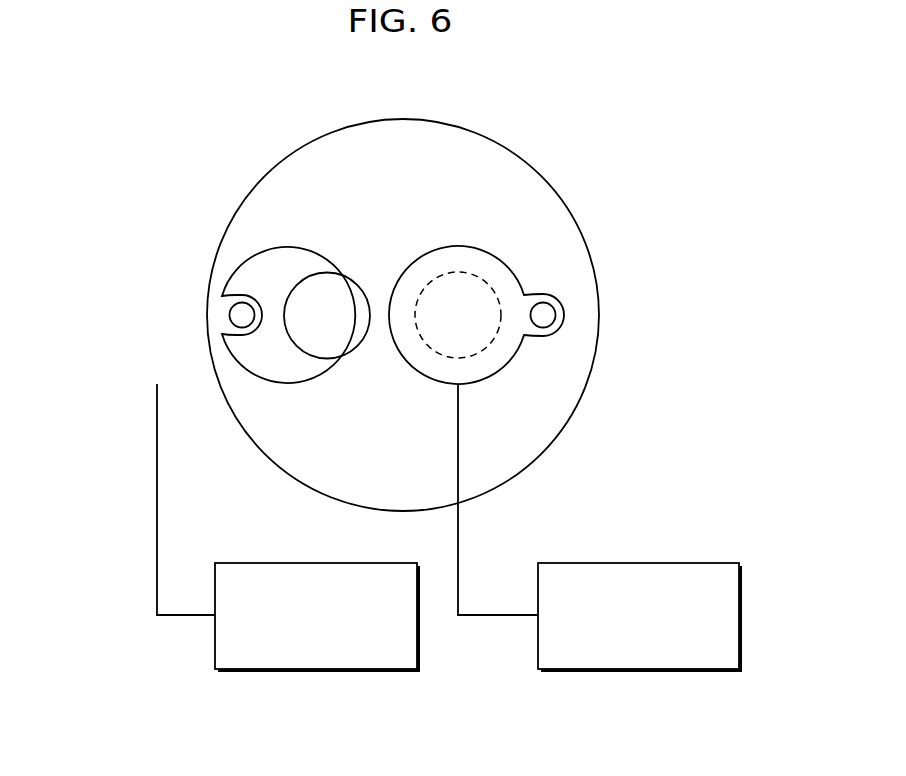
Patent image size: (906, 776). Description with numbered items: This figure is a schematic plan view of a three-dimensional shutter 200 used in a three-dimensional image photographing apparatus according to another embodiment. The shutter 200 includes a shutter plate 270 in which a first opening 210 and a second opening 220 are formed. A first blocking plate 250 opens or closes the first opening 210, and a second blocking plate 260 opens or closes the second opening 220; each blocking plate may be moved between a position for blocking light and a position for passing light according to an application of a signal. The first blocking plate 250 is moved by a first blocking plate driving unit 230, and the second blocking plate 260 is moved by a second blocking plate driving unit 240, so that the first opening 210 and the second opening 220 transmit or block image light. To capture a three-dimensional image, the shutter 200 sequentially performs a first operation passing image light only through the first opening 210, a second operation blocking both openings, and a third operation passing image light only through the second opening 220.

The 3D shutter 200 is at (636, 181).
The first opening 210 is at (291, 293).
The second opening 220 is at (493, 294).
The first blocking plate driving unit 230 is at (317, 563).
The second blocking plate driving unit 240 is at (640, 563).
The first blocking plate 250 is at (137, 263).
The second blocking plate 260 is at (462, 260).
The shutter plate 270 is at (510, 170).